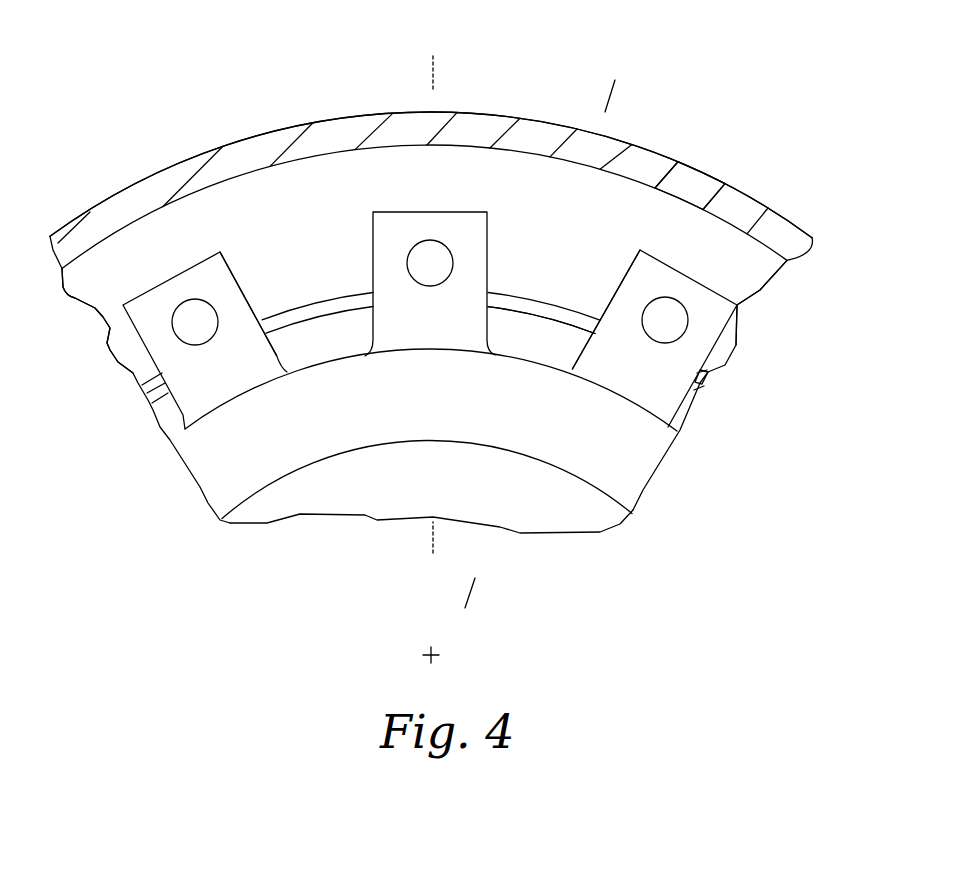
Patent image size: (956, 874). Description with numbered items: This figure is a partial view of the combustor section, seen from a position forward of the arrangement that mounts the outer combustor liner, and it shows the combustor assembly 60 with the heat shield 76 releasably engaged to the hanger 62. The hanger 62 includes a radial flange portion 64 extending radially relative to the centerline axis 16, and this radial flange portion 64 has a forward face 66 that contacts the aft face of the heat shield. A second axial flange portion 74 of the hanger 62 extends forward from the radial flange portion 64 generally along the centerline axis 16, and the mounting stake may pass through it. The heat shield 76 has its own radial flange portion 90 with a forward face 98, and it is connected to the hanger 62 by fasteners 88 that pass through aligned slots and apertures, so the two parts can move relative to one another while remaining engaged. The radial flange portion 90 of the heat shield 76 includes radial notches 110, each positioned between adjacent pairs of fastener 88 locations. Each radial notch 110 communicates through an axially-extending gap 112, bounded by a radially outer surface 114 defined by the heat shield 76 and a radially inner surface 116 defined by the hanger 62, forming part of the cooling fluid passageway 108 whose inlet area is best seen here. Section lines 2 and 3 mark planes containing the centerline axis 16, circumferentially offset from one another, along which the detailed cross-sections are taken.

The combustor assembly 60 is at (202, 95).
The hanger 62 is at (803, 218).
The second axial flange portion 74 is at (275, 125).
The cooling fluid passageway 108 is at (723, 153).
The radial flange portion 64 is at (105, 287).
The forward face 66 is at (747, 262).
The heat shield 76 is at (693, 428).
The fastener 88 is at (173, 322).
The radial flange portion 90 is at (160, 405).
The forward face 98 is at (680, 377).
The radial notch 110 is at (236, 268).
The axially-extending gap 112 is at (307, 320).
The radially outer surface 114 is at (556, 325).
The radially inner surface 116 is at (542, 300).
The centerline axis 16 is at (437, 655).
The cross-section plane of FIG. 2 is at (433, 56).
The cross-section plane of FIG. 3 is at (615, 80).